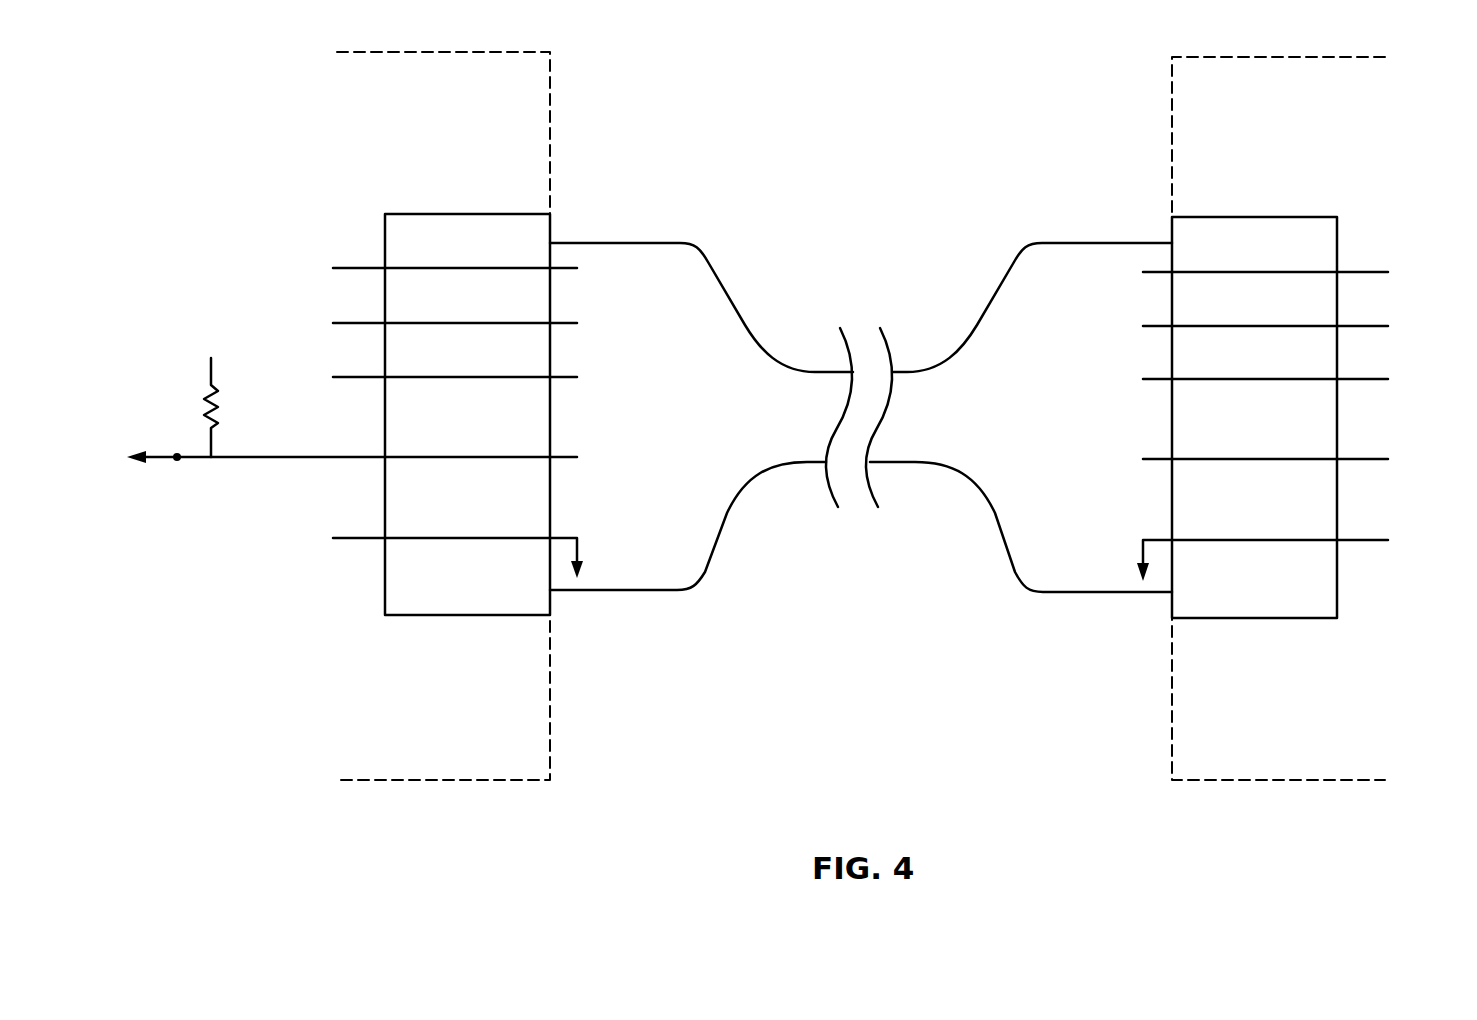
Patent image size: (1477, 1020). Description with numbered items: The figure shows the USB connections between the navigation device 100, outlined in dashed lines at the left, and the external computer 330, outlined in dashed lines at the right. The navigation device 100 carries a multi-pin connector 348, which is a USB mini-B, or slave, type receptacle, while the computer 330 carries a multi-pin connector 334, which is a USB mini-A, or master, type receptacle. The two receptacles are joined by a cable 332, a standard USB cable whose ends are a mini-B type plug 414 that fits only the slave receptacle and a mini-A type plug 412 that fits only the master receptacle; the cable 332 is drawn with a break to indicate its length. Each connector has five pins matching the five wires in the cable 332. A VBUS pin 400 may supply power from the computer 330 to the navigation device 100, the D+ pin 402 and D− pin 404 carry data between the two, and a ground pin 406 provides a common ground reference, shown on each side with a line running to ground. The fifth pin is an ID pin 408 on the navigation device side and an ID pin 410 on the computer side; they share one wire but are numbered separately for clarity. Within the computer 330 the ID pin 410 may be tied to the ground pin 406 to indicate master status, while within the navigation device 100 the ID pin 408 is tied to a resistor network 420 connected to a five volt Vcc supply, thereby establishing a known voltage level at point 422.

The navigation device 100 is at (405, 48).
The external computer 330 is at (1245, 54).
The multi-pin connector 348 is at (466, 214).
The multi-pin connector 334 is at (1255, 217).
The VBUS pin 400 is at (358, 268).
The D+ pin 402 is at (358, 323).
The D− pin 404 is at (358, 377).
The ground pin 406 is at (358, 538).
The ID pin 408 is at (358, 457).
The ID pin 410 is at (1362, 459).
The mini-A type plug 412 is at (1172, 212).
The mini-B type plug 414 is at (554, 212).
The cable 332 is at (870, 298).
The resistor network 420 is at (206, 410).
The point 422 is at (176, 463).